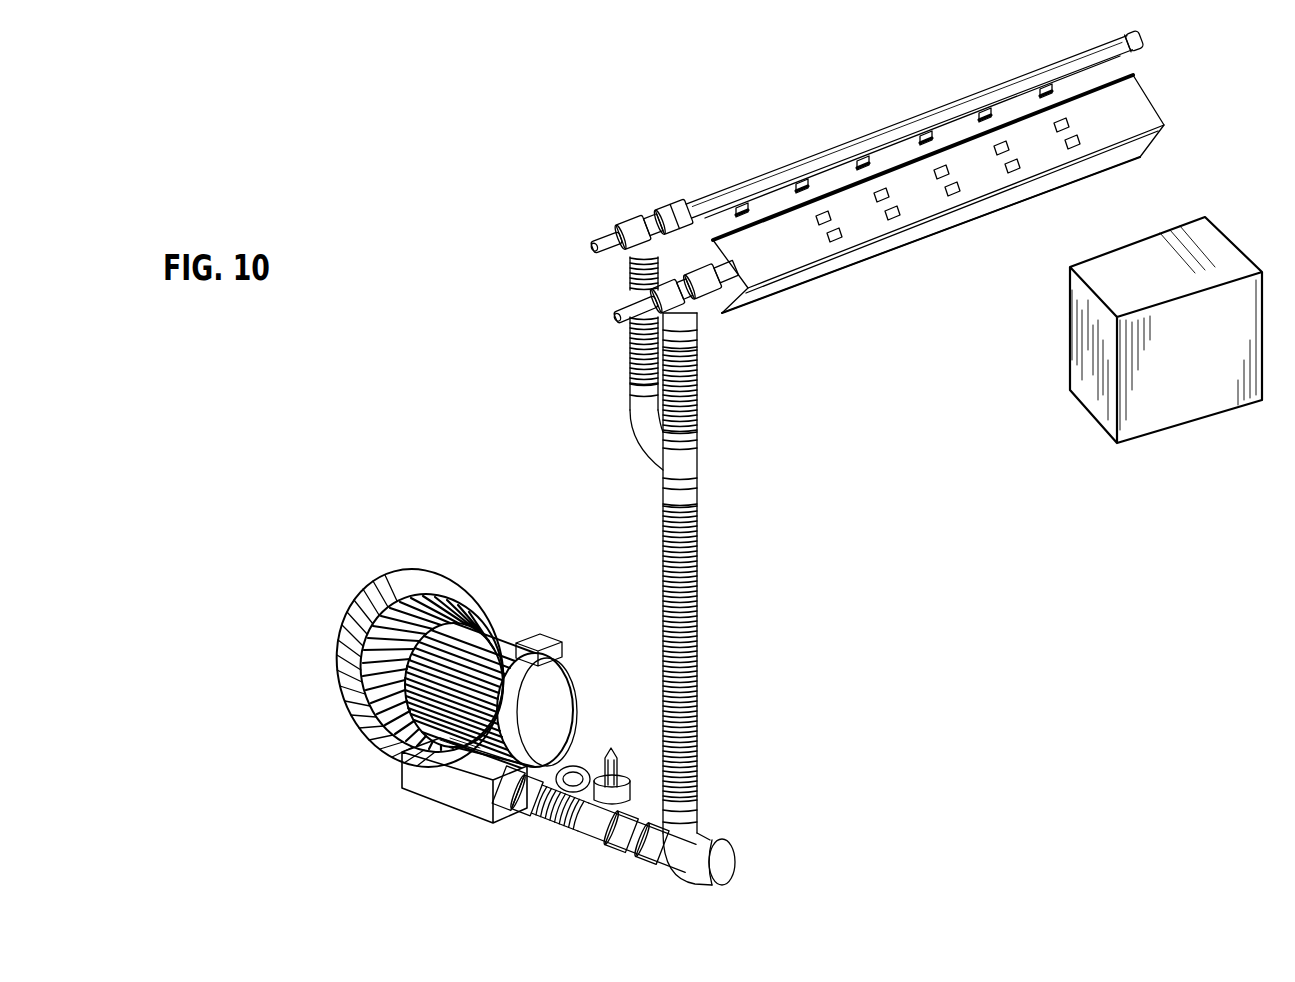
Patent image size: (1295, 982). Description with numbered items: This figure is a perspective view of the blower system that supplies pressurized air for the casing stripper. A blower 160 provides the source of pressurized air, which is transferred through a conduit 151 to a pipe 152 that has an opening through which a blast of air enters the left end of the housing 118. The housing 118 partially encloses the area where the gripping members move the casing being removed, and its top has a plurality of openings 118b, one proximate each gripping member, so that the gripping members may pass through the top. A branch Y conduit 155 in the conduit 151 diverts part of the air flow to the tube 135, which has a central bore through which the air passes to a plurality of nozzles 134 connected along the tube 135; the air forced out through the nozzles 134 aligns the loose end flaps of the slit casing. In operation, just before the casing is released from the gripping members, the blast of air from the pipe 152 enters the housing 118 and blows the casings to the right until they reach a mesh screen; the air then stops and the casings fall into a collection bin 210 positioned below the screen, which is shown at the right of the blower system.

The housing 118 is at (768, 276).
The opening 118b is at (937, 168).
The nozzles 134 is at (750, 208).
The tube 135 is at (705, 199).
The conduit 151 is at (698, 596).
The pipe 152 is at (732, 282).
The branch Y conduit 155 is at (629, 359).
The blower 160 is at (435, 564).
The collection bin 210 is at (1072, 327).